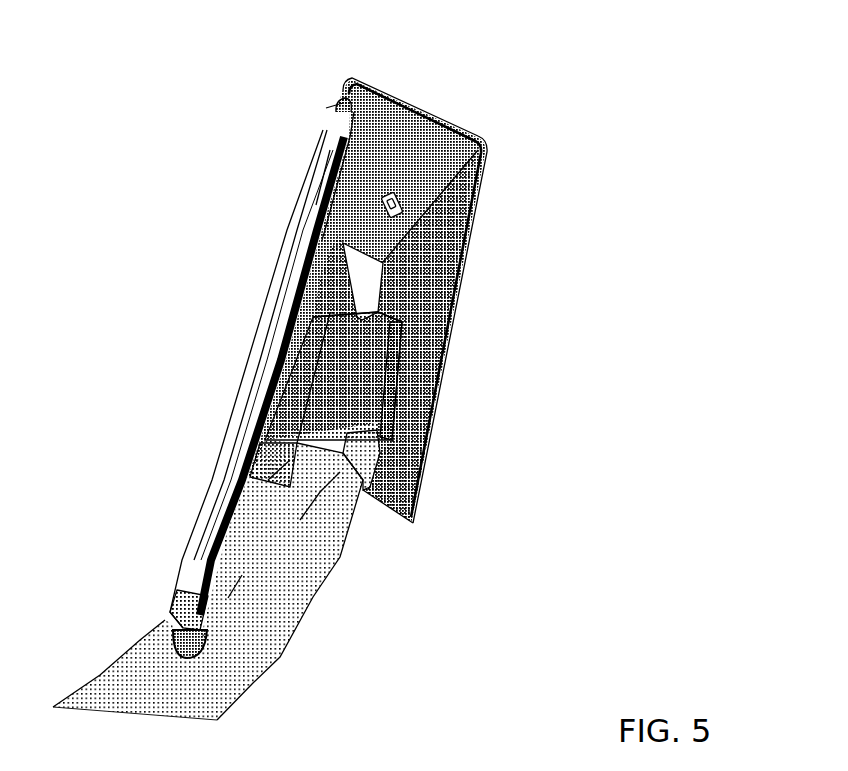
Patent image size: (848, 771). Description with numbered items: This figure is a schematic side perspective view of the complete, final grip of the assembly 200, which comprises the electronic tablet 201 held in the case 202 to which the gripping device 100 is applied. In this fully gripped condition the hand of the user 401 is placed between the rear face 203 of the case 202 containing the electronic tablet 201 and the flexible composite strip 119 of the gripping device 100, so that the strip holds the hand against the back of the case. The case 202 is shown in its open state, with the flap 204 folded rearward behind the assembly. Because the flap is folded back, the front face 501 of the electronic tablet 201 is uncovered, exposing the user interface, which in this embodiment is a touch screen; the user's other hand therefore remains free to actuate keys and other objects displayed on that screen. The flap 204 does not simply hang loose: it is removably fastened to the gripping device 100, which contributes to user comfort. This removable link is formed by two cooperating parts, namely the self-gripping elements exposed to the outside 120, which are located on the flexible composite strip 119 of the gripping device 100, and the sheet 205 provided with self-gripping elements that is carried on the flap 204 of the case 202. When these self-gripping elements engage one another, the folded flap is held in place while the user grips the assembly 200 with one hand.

The assembly 200 is at (320, 51).
The electronic tablet 201 is at (260, 380).
The case 202 is at (418, 298).
The rear face 203 is at (263, 385).
The flap 204 is at (461, 300).
The sheet 205 is at (429, 335).
The gripping device 100 is at (440, 336).
The flexible composite strip 119 is at (418, 339).
The self-gripping elements exposed to the outside 120 is at (452, 394).
The hand of the user 401 is at (247, 575).
The front face 501 is at (236, 379).